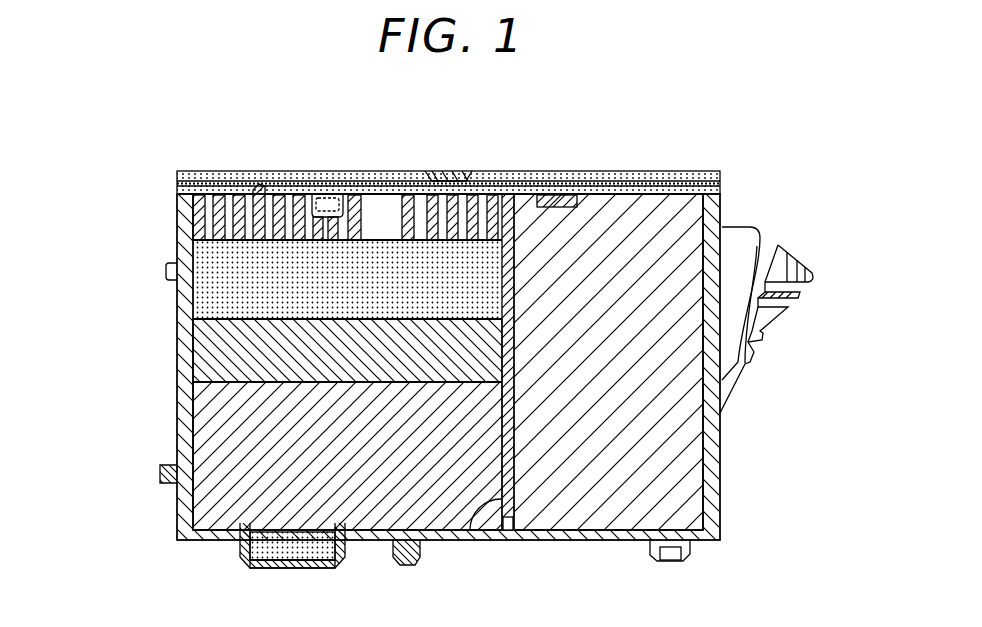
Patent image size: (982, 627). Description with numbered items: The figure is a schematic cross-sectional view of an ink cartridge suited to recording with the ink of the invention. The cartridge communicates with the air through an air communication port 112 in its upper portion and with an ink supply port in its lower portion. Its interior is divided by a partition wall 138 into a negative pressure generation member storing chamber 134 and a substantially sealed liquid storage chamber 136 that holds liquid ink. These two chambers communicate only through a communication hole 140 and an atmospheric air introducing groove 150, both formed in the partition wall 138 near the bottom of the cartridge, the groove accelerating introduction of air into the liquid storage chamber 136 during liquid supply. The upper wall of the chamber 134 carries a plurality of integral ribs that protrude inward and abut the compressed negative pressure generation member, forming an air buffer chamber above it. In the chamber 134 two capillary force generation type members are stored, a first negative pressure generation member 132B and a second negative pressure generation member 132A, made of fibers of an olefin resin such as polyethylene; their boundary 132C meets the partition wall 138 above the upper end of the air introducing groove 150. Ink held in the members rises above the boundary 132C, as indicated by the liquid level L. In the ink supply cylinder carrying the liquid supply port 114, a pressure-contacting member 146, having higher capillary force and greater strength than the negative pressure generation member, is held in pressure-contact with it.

The air communication port 112 is at (447, 172).
The partition wall 138 is at (508, 200).
The second negative pressure generation member 132A is at (213, 258).
The liquid level L is at (215, 318).
The negative pressure generation member storing chamber 134 is at (220, 348).
The boundary 132C is at (215, 378).
The first negative pressure generation member 132B is at (215, 418).
The liquid storage chamber 136 is at (677, 480).
The communication hole 140 is at (507, 536).
The atmospheric air introducing groove 150 is at (470, 536).
The liquid supply port 114 is at (245, 548).
The pressure-contacting member 146 is at (305, 545).